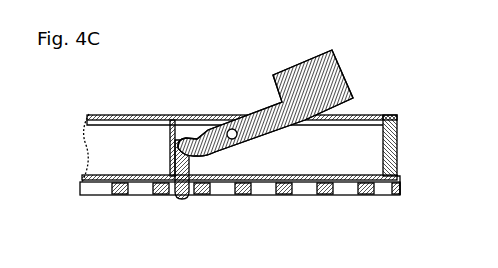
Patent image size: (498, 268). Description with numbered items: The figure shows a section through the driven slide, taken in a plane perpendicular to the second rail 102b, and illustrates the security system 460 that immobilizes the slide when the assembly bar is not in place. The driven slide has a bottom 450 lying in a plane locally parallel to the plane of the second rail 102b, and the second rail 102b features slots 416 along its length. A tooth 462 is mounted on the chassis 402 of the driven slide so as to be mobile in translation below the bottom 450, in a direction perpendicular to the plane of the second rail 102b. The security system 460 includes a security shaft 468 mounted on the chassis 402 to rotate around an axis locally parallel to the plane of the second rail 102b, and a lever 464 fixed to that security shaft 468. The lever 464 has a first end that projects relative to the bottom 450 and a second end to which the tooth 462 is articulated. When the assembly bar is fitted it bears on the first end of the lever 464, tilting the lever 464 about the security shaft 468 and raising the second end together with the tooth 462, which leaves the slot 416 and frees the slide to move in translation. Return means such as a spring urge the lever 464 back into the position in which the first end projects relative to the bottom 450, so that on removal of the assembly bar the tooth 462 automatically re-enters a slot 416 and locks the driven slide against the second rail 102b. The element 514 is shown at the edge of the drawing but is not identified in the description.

The chassis 402 is at (398, 145).
The slot 416 is at (86, 198).
The bottom 450 is at (115, 117).
The security system 460 is at (255, 80).
The tooth 462 is at (187, 202).
The lever 464 is at (276, 72).
The security shaft 468 is at (231, 104).
The second rail 102b is at (403, 190).
The element 514 is at (420, 4).